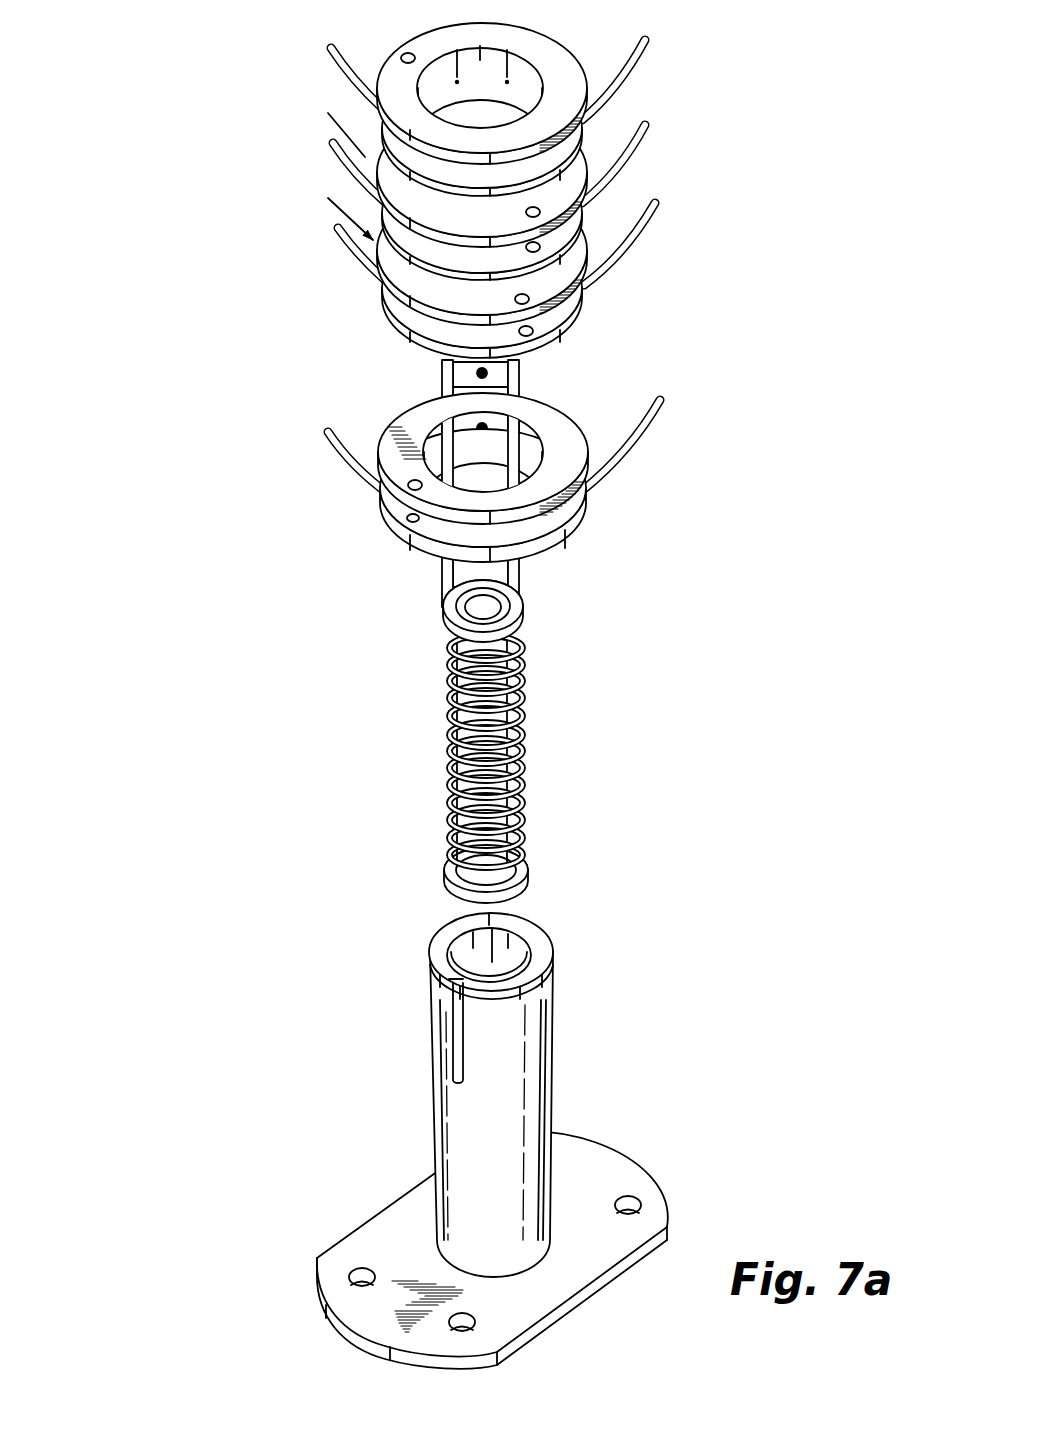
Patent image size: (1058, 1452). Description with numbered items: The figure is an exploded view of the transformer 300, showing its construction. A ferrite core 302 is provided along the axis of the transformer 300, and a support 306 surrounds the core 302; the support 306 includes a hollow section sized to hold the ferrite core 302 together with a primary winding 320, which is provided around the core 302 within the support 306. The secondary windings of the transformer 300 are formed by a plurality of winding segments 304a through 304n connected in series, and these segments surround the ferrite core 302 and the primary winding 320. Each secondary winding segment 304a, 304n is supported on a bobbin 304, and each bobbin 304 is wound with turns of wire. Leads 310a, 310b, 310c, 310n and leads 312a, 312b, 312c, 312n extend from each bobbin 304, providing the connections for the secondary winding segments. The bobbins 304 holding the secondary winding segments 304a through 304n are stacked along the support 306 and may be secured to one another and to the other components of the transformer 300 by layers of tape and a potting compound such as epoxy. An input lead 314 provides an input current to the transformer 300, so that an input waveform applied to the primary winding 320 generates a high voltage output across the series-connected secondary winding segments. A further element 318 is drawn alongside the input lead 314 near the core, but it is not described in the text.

The transformer 300 is at (471, 684).
The ferrite core 302 is at (495, 727).
The bobbin 304 is at (452, 82).
The winding segment 304a is at (390, 108).
The winding segment 304n is at (399, 303).
The support 306 is at (367, 1215).
The lead 310a is at (648, 45).
The lead 310b is at (648, 128).
The lead 310c is at (660, 210).
The lead 310n is at (665, 403).
The lead 312a is at (330, 58).
The lead 312b is at (333, 150).
The lead 312c is at (340, 233).
The lead 312n is at (333, 440).
The input lead 314 is at (448, 575).
The guide rod 318 is at (516, 575).
The primary winding 320 is at (448, 818).